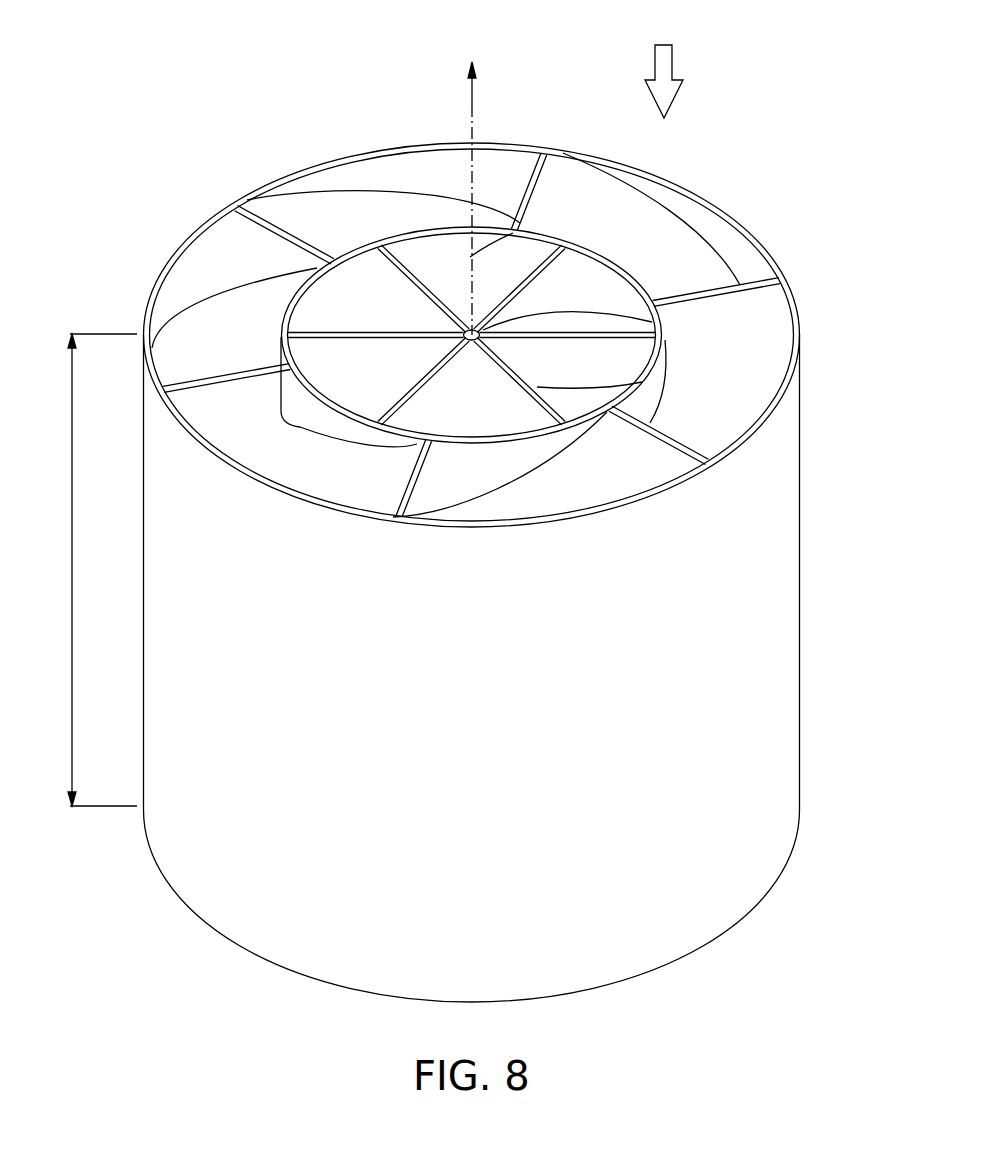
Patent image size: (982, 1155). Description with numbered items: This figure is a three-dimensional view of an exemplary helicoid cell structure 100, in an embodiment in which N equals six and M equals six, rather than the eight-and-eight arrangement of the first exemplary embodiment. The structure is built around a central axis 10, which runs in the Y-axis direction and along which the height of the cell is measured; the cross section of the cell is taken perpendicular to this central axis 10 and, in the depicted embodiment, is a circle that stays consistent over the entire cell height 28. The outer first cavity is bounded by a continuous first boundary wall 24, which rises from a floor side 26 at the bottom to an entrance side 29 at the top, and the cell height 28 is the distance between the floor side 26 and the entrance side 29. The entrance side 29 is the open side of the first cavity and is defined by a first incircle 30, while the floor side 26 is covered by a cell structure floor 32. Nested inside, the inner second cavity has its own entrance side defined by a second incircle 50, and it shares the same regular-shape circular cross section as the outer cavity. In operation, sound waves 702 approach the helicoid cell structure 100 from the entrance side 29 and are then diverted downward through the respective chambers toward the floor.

The helicoid cell structure 100 is at (187, 106).
The central axis 10 is at (475, 103).
The sound waves 702 is at (676, 62).
The entrance side 29 is at (743, 222).
The first incircle 30 is at (790, 287).
The second incircle 50 is at (655, 348).
The first boundary wall 24 is at (801, 570).
The cell height 28 is at (96, 570).
The floor side 26 is at (743, 918).
The cell structure floor 32 is at (705, 960).